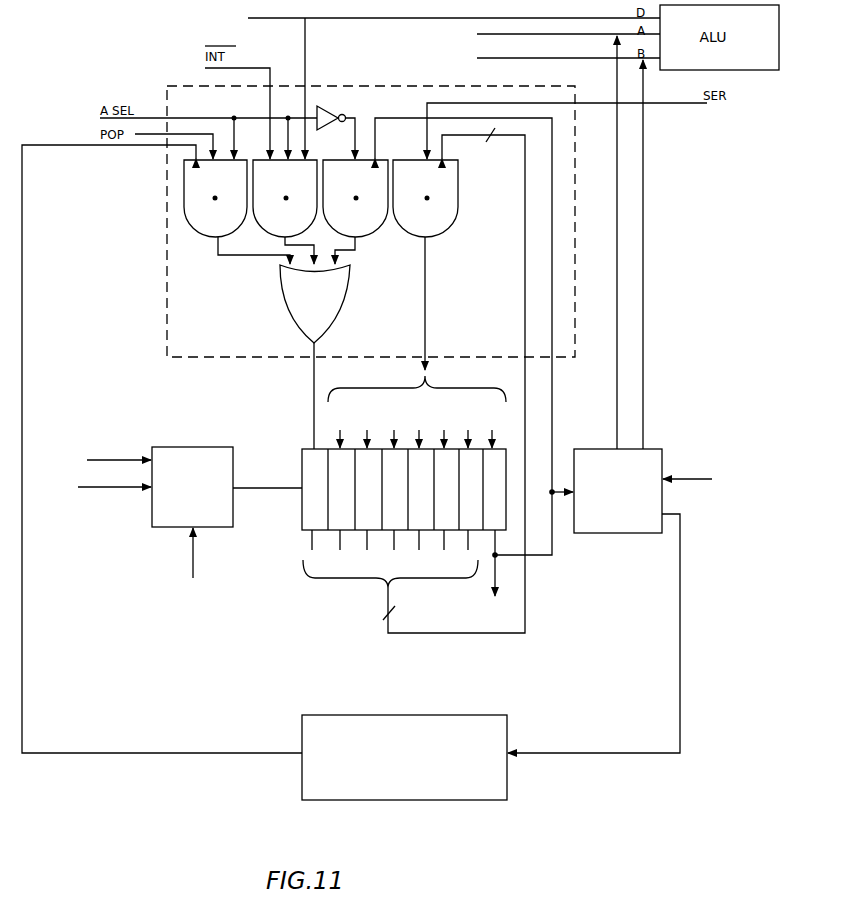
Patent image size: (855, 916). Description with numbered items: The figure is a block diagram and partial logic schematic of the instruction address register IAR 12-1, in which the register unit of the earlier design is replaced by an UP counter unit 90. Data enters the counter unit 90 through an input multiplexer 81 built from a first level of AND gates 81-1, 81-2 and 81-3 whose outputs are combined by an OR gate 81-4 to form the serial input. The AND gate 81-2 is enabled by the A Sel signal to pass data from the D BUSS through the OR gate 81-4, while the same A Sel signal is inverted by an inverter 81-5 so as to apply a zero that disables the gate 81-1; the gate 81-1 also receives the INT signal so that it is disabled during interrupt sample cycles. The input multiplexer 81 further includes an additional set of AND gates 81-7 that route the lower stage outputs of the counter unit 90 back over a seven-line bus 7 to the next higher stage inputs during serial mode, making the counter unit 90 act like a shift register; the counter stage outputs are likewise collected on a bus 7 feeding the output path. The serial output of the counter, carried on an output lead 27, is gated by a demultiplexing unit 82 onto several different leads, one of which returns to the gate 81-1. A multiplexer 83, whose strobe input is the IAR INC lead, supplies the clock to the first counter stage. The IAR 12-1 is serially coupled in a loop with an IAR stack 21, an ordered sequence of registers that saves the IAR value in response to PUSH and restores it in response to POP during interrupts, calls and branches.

The input multiplexer 81 is at (167, 196).
The AND gate 81-1 is at (271, 234).
The AND gate 81-2 is at (373, 233).
The AND gate 81-3 is at (201, 233).
The OR gate 81-4 is at (337, 314).
The inverter 81-5 is at (325, 108).
The additional set of AND gates 81-7 is at (452, 209).
The demultiplexing unit 82 is at (608, 515).
The multiplexer 83 is at (202, 508).
The UP counter unit 90 is at (292, 539).
The 7-bit bus 7 is at (439, 376).
The output line 27 is at (490, 576).
The IAR stack 21 is at (503, 787).
The instruction address register 12-1 is at (146, 766).